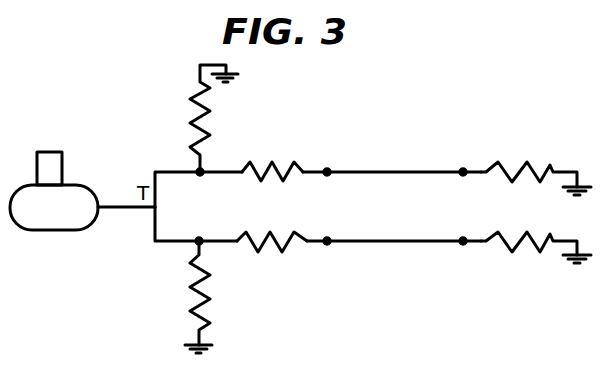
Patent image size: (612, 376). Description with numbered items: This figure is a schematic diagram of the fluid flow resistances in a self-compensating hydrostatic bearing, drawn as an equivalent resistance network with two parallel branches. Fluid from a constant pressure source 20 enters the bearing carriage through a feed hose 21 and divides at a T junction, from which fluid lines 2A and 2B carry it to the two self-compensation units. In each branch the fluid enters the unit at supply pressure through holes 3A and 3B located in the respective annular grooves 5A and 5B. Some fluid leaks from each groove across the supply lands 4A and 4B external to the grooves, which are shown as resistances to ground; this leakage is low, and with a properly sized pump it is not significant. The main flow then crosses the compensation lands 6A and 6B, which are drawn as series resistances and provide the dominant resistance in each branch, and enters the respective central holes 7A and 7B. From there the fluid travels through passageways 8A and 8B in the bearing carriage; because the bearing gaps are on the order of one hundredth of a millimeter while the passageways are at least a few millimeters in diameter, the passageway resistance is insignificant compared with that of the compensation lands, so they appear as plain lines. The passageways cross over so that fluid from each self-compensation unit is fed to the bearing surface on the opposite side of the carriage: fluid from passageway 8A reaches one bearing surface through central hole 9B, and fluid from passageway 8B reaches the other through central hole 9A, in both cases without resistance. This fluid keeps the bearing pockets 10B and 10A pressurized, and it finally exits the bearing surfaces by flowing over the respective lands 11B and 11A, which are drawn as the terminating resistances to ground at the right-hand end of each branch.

The constant pressure source 20 is at (42, 222).
The feed hose 21 is at (109, 215).
The fluid line 2A is at (157, 170).
The fluid line 2B is at (160, 242).
The hole 3A is at (198, 170).
The hole 3B is at (197, 244).
The supply land 4A is at (193, 112).
The supply land 4B is at (191, 311).
The annular groove 5A is at (228, 167).
The annular groove 5B is at (222, 245).
The compensation land 6A is at (284, 162).
The compensation land 6B is at (267, 254).
The central hole 7A is at (329, 170).
The central hole 7B is at (327, 244).
The passageway 8A is at (391, 170).
The passageway 8B is at (388, 243).
The central hole 9A is at (462, 243).
The central hole 9B is at (462, 169).
The bearing pocket 10A is at (476, 243).
The bearing pocket 10B is at (480, 168).
The land 11A is at (515, 252).
The land 11B is at (527, 160).